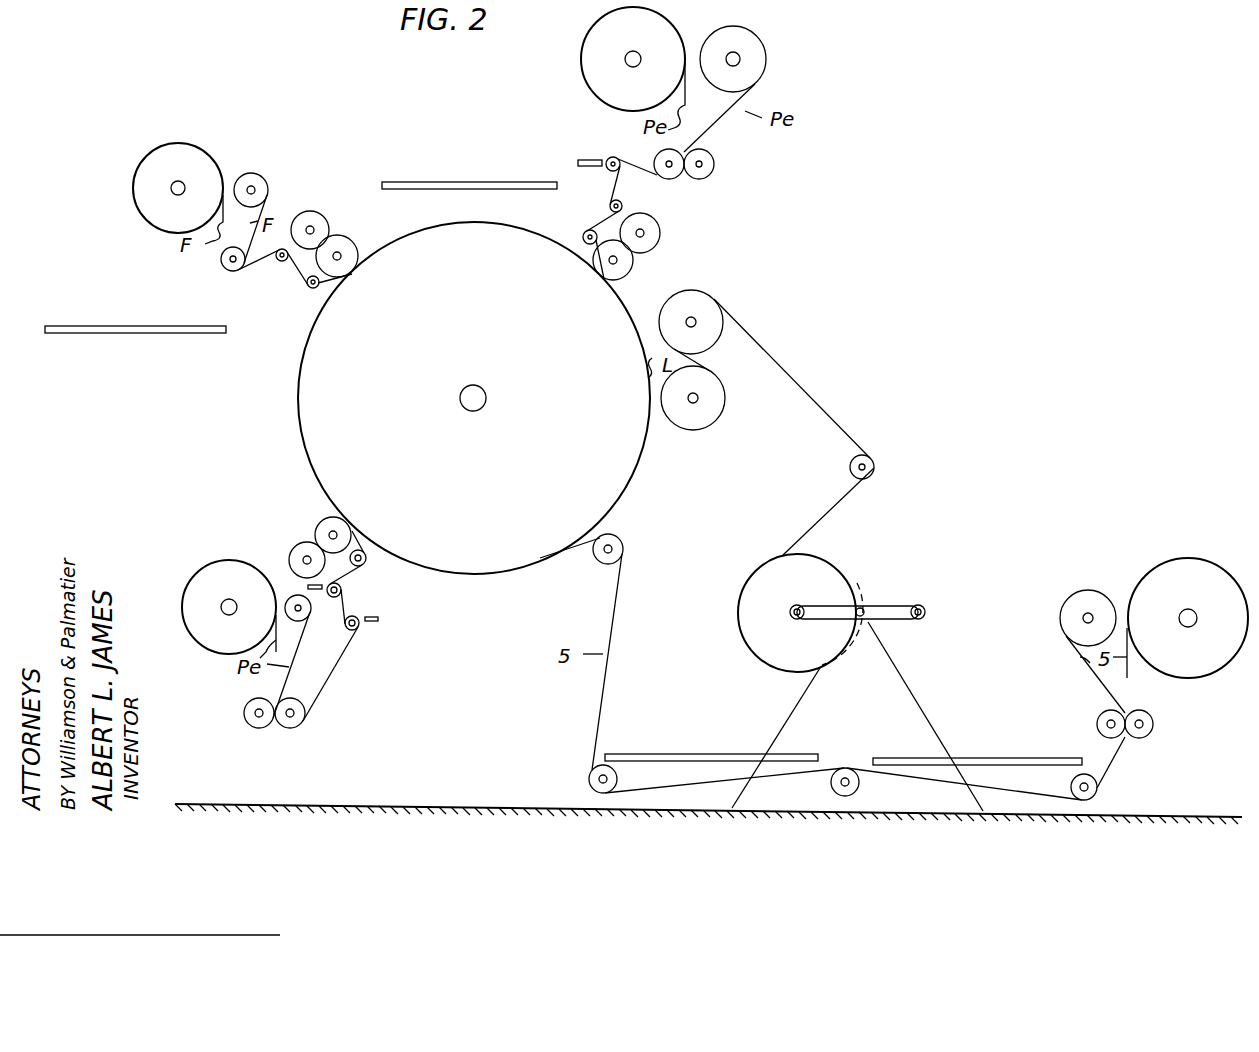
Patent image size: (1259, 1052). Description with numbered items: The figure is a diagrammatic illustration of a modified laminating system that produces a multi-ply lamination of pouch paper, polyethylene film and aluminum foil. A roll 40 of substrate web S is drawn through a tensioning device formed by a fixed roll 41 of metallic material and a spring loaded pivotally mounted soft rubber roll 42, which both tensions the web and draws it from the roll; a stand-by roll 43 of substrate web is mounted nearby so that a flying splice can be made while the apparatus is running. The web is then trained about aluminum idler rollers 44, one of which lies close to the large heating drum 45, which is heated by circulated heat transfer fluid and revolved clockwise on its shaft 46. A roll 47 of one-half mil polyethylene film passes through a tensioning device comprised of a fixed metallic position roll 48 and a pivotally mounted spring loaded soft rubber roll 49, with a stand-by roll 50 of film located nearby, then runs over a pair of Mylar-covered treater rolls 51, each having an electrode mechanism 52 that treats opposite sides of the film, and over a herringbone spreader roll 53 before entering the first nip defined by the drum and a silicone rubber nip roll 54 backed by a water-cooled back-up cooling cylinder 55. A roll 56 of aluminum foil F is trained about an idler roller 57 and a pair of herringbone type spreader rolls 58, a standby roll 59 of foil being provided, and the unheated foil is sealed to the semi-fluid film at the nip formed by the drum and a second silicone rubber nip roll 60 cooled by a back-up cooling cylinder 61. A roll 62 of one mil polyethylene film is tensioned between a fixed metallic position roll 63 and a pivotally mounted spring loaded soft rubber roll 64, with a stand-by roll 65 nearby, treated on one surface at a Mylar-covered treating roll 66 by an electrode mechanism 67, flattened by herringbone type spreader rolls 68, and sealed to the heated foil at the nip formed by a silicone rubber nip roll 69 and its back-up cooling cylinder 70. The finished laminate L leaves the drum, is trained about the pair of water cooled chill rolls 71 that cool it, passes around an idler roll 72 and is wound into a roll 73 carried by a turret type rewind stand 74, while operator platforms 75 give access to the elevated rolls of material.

The roll of substrate web 40 is at (1085, 591).
The fixed roll 41 is at (1097, 723).
The spring loaded pivotally mounted soft rubber roll 42 is at (1153, 724).
The stand-by roll of substrate web 43 is at (1203, 595).
The aluminum idler rollers 44 is at (600, 563).
The heating drum 45 is at (470, 335).
The shaft 46 is at (460, 398).
The roll of thermoplastic material 47 is at (304, 597).
The fixed metallic position roll 48 is at (250, 723).
The pivotally mounted spring loaded soft rubber roll 49 is at (295, 725).
The stand-by roll of polyethylene film 50 is at (243, 591).
The treater rolls 51 is at (342, 589).
The electrode mechanism 52 is at (316, 589).
The herringbone spreader roll 53 is at (366, 564).
The nip roll 54 is at (330, 520).
The back-up cooling cylinder 55 is at (300, 553).
The roll of aluminum foil 56 is at (251, 173).
The idler roller 57 is at (224, 267).
The herringbone type spreader rolls 58 is at (306, 282).
The standby roll of aluminum foil 59 is at (193, 175).
The silicone rubber nip roll 60 is at (350, 241).
The back-up cooling cylinder 61 is at (318, 210).
The roll of one mil polyethylene film 62 is at (766, 49).
The fixed metallic position roll 63 is at (662, 158).
The pivotally mounted spring loaded soft rubber roll 64 is at (714, 164).
The stand-by roll of polyethylene film 65 is at (648, 47).
The treating roll 66 is at (633, 182).
The electrode mechanism 67 is at (580, 160).
The herringbone type spreader rolls 68 is at (609, 205).
The silicone rubber nip roll 69 is at (633, 261).
The back-up cooling cylinder 70 is at (660, 233).
The stripping rollers 71 is at (710, 325).
The idler roll 72 is at (850, 467).
The roll 73 is at (811, 590).
The turret type rewind stand 74 is at (870, 700).
The operator platforms 75 is at (464, 182).